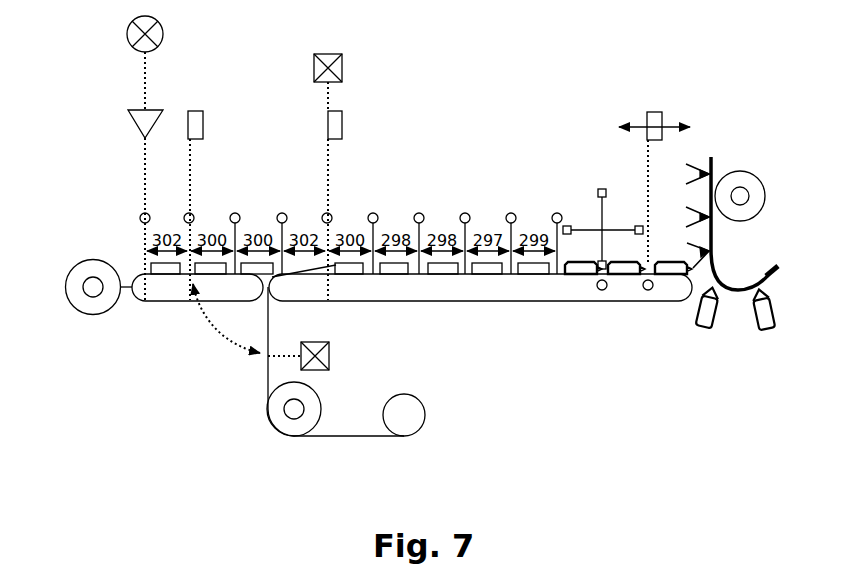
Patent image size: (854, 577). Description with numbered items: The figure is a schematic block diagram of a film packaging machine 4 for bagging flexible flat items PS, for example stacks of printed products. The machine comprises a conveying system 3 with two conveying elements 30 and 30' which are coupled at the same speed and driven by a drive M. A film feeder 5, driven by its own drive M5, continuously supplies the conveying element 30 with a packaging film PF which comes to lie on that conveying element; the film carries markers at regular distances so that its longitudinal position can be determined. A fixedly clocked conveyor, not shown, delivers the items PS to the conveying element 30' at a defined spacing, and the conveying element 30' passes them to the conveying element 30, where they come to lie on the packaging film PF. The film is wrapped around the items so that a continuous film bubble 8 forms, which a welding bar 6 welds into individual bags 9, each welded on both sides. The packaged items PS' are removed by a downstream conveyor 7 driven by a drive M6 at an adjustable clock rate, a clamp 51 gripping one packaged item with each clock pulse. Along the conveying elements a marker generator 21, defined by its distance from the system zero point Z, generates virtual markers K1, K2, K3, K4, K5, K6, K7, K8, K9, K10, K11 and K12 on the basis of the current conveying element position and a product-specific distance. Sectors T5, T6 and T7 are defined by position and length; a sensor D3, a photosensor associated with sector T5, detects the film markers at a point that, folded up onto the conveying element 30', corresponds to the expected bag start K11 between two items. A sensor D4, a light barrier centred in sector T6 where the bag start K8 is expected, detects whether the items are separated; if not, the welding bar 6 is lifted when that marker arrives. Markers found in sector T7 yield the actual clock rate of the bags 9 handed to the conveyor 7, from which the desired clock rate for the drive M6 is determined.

The system zero point Z is at (126, 33).
The marker generator 21 is at (131, 118).
The sector T5 is at (205, 123).
The sensor D4 is at (345, 70).
The sector T6 is at (345, 123).
The sector T7 is at (663, 121).
The virtual marker K12 is at (142, 213).
The virtual marker K11 is at (186, 213).
The virtual marker K10 is at (232, 213).
The virtual marker K9 is at (279, 213).
The virtual marker K8 is at (324, 213).
The virtual marker K7 is at (370, 213).
The virtual marker K6 is at (416, 213).
The virtual marker K5 is at (462, 213).
The virtual marker K4 is at (508, 213).
The virtual marker K3 is at (554, 213).
The virtual marker K2 is at (602, 291).
The virtual marker K1 is at (646, 291).
The drive M is at (92, 266).
The conveying element 30' is at (193, 319).
The flexible flat items PS is at (212, 314).
The sensor D3 is at (328, 357).
The conveying element 30 is at (480, 312).
The film bubble 8 is at (508, 272).
The welding bar 6 is at (592, 216).
The conveying system 3 is at (430, 315).
The drive M5 is at (282, 422).
The packaging film PF is at (365, 438).
The film feeder 5 is at (312, 448).
The film packaging machine 4 is at (200, 388).
The clamp 51 is at (678, 222).
The drive M6 is at (744, 172).
The bag 9 is at (707, 333).
The conveyor 7 is at (742, 353).
The packaged items PS' is at (658, 329).